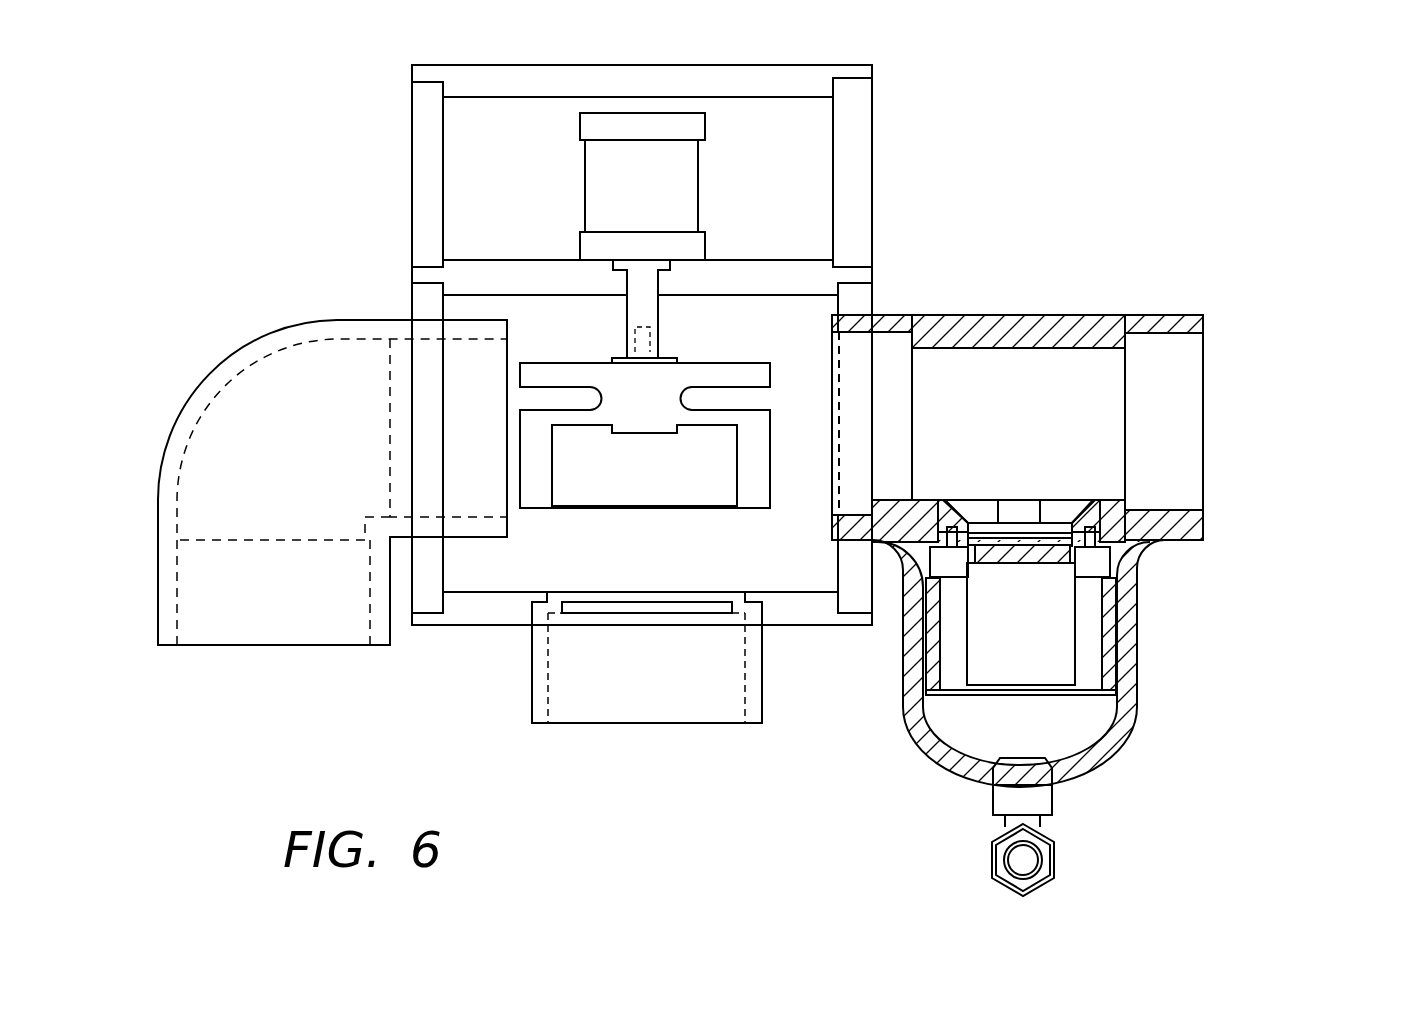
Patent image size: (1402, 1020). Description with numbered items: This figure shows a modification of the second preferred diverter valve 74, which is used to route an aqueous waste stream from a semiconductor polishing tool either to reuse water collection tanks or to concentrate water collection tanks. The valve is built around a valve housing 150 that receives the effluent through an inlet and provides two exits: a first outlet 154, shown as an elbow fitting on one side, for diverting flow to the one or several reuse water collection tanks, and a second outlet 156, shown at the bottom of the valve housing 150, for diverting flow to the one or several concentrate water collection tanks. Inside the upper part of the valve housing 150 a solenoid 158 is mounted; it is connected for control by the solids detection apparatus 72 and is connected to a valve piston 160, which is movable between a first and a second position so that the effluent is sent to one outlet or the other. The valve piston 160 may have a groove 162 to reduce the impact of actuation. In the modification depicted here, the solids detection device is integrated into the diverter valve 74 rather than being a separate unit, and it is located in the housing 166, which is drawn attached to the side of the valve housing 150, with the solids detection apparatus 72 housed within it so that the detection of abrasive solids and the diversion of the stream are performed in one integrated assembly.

The diverter valve 74 is at (1035, 187).
The solids detection apparatus 72 is at (1043, 653).
The valve housing 150 is at (412, 303).
The first outlet 154 is at (210, 380).
The second outlet 156 is at (533, 695).
The solenoid 158 is at (585, 185).
The valve piston 160 is at (535, 497).
The groove 162 is at (553, 400).
The housing 166 is at (1204, 766).